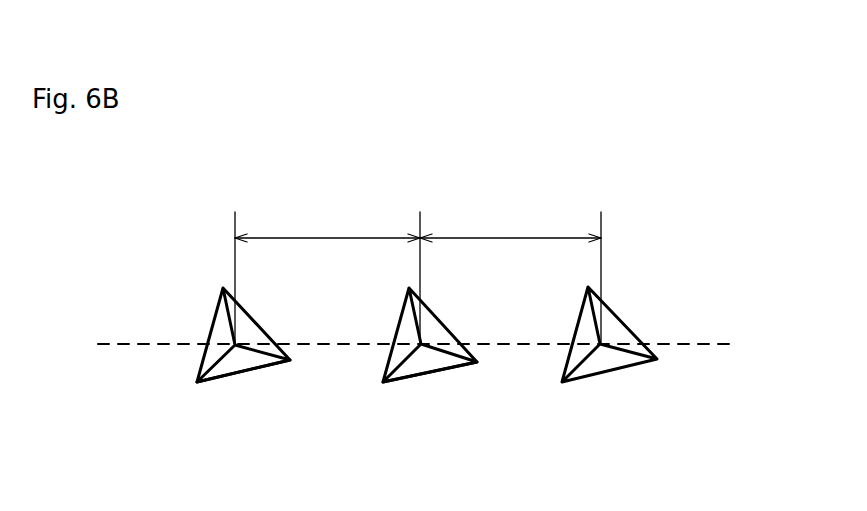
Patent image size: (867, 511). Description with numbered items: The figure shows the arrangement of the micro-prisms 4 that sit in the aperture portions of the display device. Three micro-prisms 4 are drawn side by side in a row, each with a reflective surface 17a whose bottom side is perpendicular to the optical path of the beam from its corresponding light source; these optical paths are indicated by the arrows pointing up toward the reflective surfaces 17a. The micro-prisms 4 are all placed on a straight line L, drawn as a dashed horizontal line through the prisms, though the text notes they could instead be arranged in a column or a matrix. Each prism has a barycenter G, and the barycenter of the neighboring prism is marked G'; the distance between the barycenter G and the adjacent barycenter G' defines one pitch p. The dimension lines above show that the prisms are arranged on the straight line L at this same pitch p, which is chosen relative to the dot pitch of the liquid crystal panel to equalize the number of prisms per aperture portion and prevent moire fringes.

The micro-prism 4 is at (212, 318).
The reflective surface 17a is at (238, 362).
The barycenter G is at (284, 313).
The barycenter of adjacent micro-prism G' is at (473, 312).
The pitch p is at (418, 274).
The straight line L is at (428, 346).